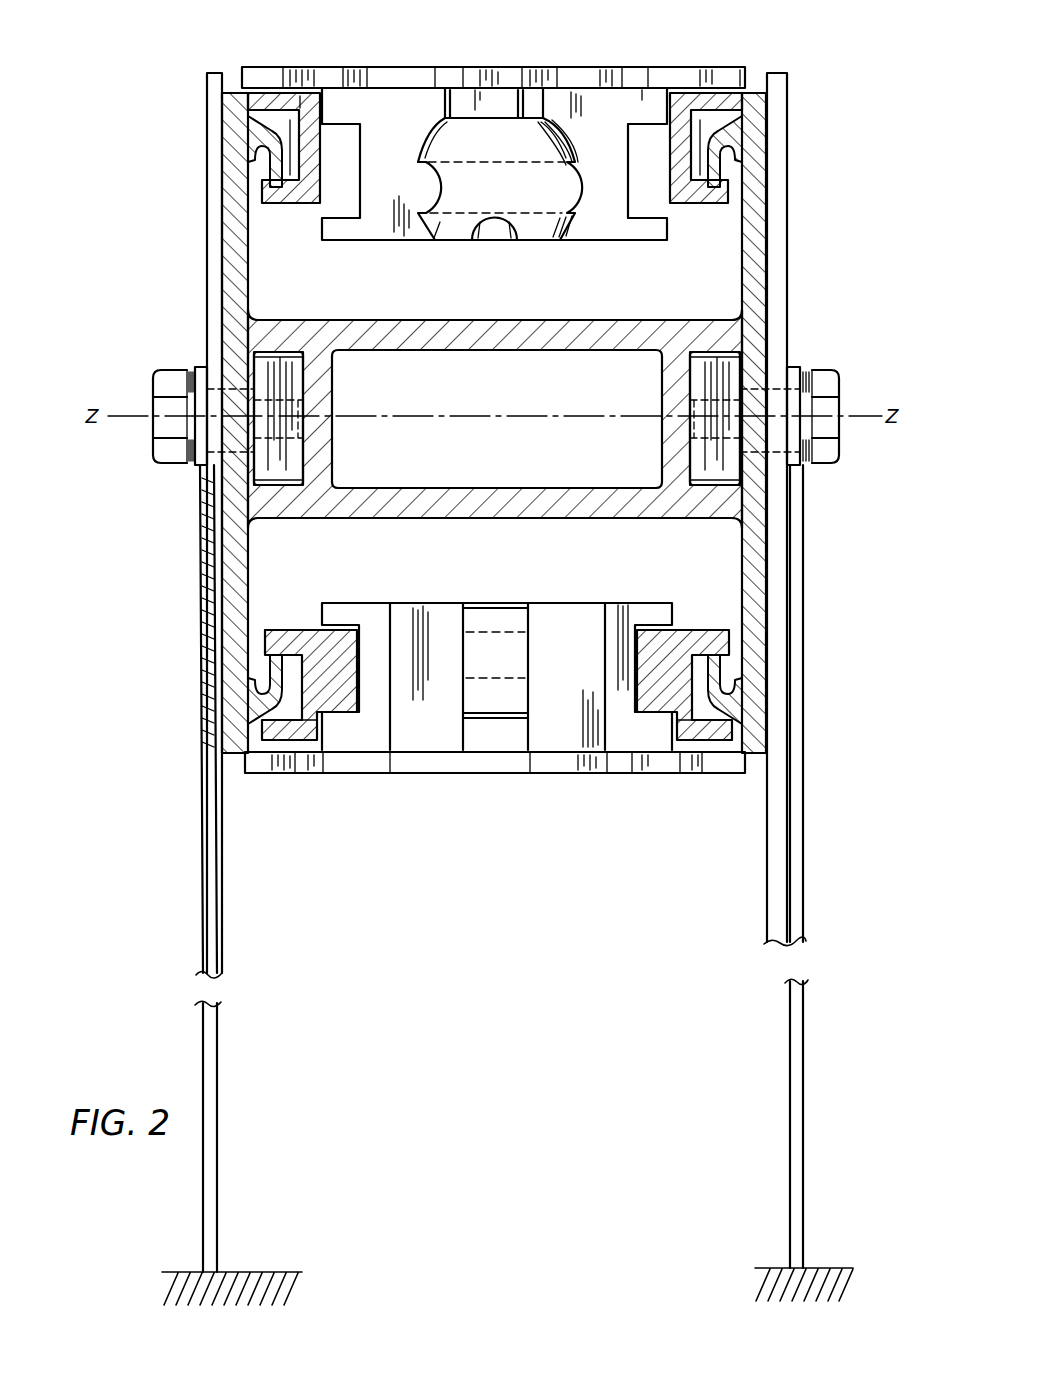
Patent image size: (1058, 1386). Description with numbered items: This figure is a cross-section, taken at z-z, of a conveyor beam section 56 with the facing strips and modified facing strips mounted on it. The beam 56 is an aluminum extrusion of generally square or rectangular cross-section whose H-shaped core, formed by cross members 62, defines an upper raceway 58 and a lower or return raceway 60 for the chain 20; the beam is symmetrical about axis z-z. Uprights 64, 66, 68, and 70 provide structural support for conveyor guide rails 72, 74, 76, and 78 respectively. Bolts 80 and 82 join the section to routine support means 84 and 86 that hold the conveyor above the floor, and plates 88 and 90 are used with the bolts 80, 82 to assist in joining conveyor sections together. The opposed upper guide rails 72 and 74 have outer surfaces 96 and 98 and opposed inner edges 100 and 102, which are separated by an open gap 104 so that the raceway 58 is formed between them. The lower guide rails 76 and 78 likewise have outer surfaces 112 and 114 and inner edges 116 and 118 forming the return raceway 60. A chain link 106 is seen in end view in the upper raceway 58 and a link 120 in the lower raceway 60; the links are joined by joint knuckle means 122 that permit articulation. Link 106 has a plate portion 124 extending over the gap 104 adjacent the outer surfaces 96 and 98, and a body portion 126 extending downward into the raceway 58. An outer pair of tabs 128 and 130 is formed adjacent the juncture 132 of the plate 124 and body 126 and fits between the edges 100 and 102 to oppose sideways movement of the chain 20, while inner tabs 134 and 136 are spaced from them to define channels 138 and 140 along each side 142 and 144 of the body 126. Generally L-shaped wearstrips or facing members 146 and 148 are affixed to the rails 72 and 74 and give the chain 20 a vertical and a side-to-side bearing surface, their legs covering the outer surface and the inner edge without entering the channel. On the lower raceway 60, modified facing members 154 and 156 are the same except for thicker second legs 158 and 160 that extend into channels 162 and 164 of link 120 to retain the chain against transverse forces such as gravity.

The chain 20 is at (568, 749).
The conveyor beam section 56 is at (237, 272).
The upper raceway 58 is at (484, 290).
The lower or return raceway 60 is at (469, 579).
The cross members 62 is at (446, 335).
The upright 64 is at (237, 230).
The upright 66 is at (760, 234).
The upright 68 is at (236, 610).
The upright 70 is at (760, 582).
The conveyor guide rail 72 is at (276, 152).
The conveyor guide rail 74 is at (726, 141).
The conveyor guide rail 76 is at (250, 714).
The conveyor guide rail 78 is at (762, 708).
The bolt 80 is at (166, 466).
The bolt 82 is at (826, 466).
The support means 84 is at (200, 826).
The support means 86 is at (788, 854).
The plate 88 is at (207, 95).
The plate 90 is at (787, 86).
The outer surface 96 is at (277, 115).
The outer surface 98 is at (735, 100).
The inner edge 100 is at (295, 186).
The inner edge 102 is at (735, 159).
The open gap 104 is at (337, 143).
The chain link 106 is at (373, 157).
The outer surface 112 is at (298, 722).
The outer surface 114 is at (718, 752).
The inner edge 116 is at (325, 630).
The inner edge 118 is at (690, 628).
The chain link 120 is at (545, 686).
The joint knuckle means 122 is at (477, 146).
The plate portion 124 is at (400, 78).
The body portion 126 is at (578, 181).
The outer tab 128 is at (345, 105).
The outer tab 130 is at (648, 105).
The juncture 132 is at (497, 95).
The inner tab 134 is at (343, 231).
The inner tab 136 is at (648, 231).
The channel 138 is at (318, 195).
The channel 140 is at (631, 190).
The side 142 is at (387, 214).
The side 144 is at (630, 191).
The wearstrip or facing member 146 is at (292, 100).
The wearstrip or facing member 148 is at (745, 66).
The modified facing member 154 is at (345, 726).
The modified facing member 156 is at (678, 733).
The thicker second leg 158 is at (305, 682).
The thicker second leg 160 is at (648, 682).
The channel 162 is at (372, 700).
The channel 164 is at (635, 720).